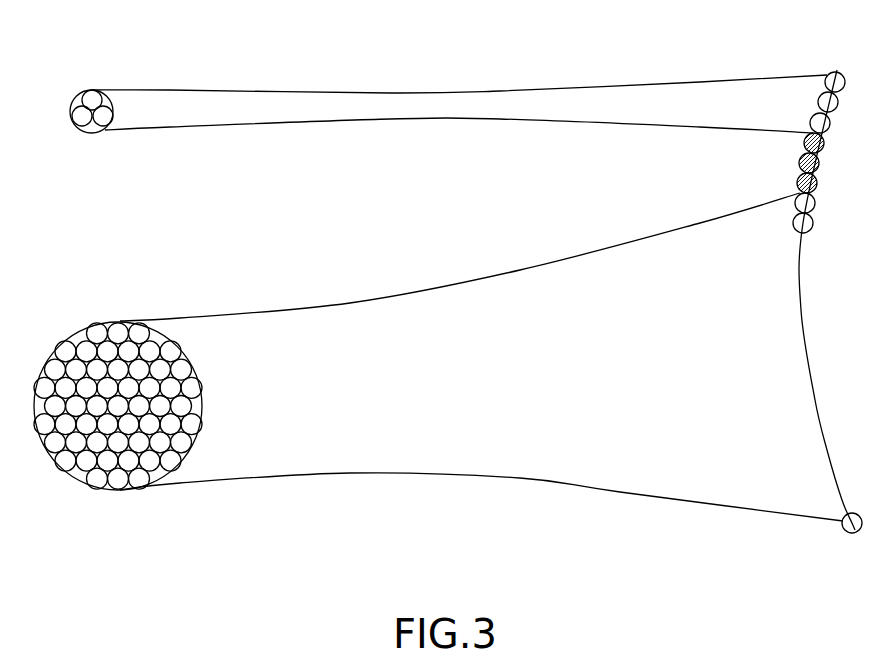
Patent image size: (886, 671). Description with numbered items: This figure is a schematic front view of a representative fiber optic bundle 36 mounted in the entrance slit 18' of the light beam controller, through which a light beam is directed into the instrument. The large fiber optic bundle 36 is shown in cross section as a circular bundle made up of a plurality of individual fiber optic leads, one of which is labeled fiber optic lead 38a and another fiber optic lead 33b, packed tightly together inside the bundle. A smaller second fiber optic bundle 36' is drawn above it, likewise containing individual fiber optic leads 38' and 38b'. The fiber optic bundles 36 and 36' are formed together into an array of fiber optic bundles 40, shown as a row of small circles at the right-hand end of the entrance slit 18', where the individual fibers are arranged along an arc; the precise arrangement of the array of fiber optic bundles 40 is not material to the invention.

The entrance slit 18' is at (491, 301).
The filament strand 33b is at (65, 459).
The fiber optic bundle 36 is at (109, 383).
The fiber optic bundle 36' is at (71, 96).
The filament 38' is at (107, 62).
The fiber optic lead 38a is at (193, 388).
The filament 38b' is at (112, 143).
The array of fiber optic bundles 40 is at (798, 163).